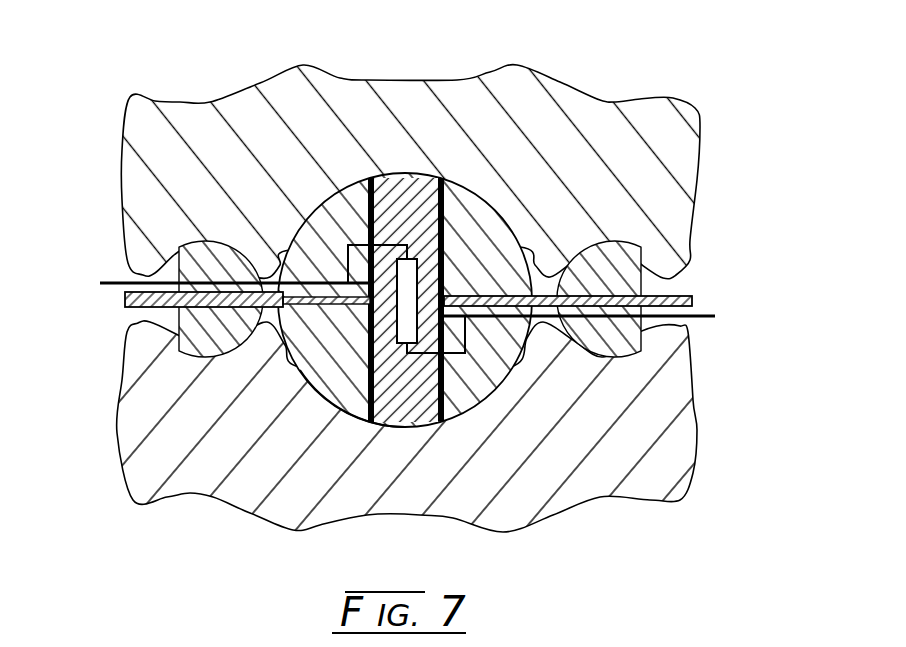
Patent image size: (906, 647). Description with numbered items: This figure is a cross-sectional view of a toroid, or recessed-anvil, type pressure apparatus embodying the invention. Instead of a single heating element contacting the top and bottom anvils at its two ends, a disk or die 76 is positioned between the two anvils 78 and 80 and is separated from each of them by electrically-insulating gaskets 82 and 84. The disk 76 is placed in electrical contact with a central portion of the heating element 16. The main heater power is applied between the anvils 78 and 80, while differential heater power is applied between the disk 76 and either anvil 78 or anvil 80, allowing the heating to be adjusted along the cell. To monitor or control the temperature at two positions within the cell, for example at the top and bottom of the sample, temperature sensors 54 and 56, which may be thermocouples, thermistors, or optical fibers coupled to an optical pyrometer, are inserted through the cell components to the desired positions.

The anvil 78 is at (353, 88).
The anvil 80 is at (527, 507).
The electrically-insulating gasket 82 is at (480, 238).
The electrically-insulating gasket 84 is at (333, 363).
The heating element 16 is at (447, 210).
The disk or die 76 is at (694, 295).
The temperature sensor 56 is at (118, 282).
The temperature sensor 54 is at (700, 318).